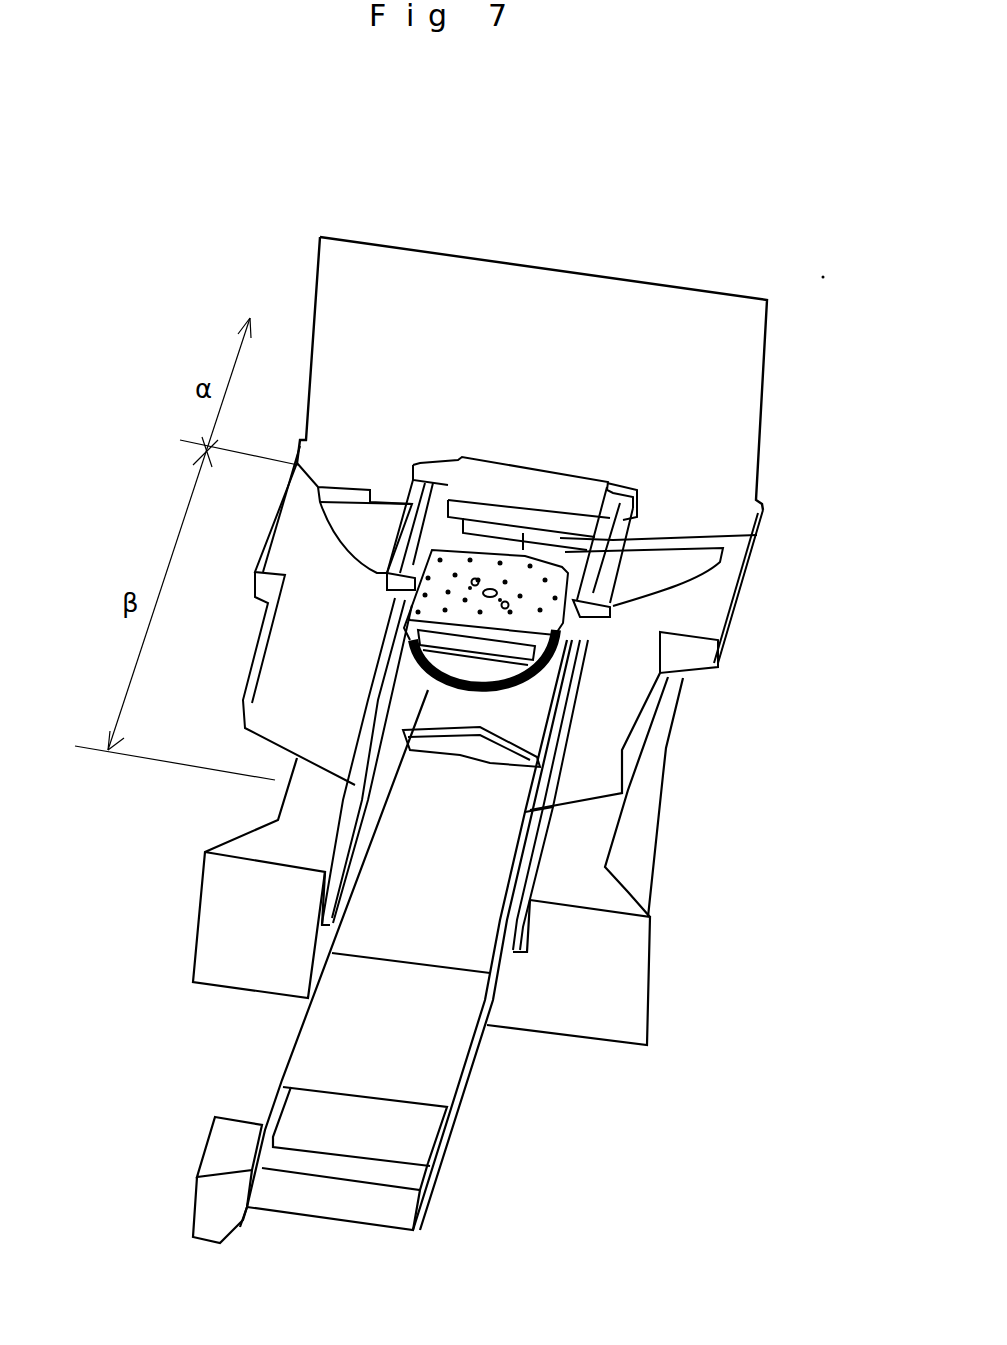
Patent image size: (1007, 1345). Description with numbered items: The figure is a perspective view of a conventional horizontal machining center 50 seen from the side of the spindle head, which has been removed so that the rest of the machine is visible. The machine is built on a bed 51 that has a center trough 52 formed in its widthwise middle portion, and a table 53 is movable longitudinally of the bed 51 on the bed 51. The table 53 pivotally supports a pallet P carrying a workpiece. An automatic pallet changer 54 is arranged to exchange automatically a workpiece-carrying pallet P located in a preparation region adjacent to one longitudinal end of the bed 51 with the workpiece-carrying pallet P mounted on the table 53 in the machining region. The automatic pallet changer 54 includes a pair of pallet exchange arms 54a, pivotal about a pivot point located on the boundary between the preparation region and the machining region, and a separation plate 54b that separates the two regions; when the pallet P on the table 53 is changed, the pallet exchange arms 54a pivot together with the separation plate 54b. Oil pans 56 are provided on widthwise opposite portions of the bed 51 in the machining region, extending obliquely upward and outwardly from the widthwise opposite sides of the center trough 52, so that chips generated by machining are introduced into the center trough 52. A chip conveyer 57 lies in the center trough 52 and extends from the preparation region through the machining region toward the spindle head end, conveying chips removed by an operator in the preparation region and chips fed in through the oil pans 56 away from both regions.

The horizontal machining center 50 is at (265, 178).
The bed 51 is at (593, 850).
The center trough 52 is at (518, 945).
The table 53 is at (423, 693).
The automatic pallet changer 54 is at (598, 627).
The pallet exchange arms 54a is at (667, 492).
The separation plate 54b is at (633, 303).
The oil pans 56 is at (280, 690).
The chip conveyer 57 is at (438, 1053).
The pallet P is at (428, 608).